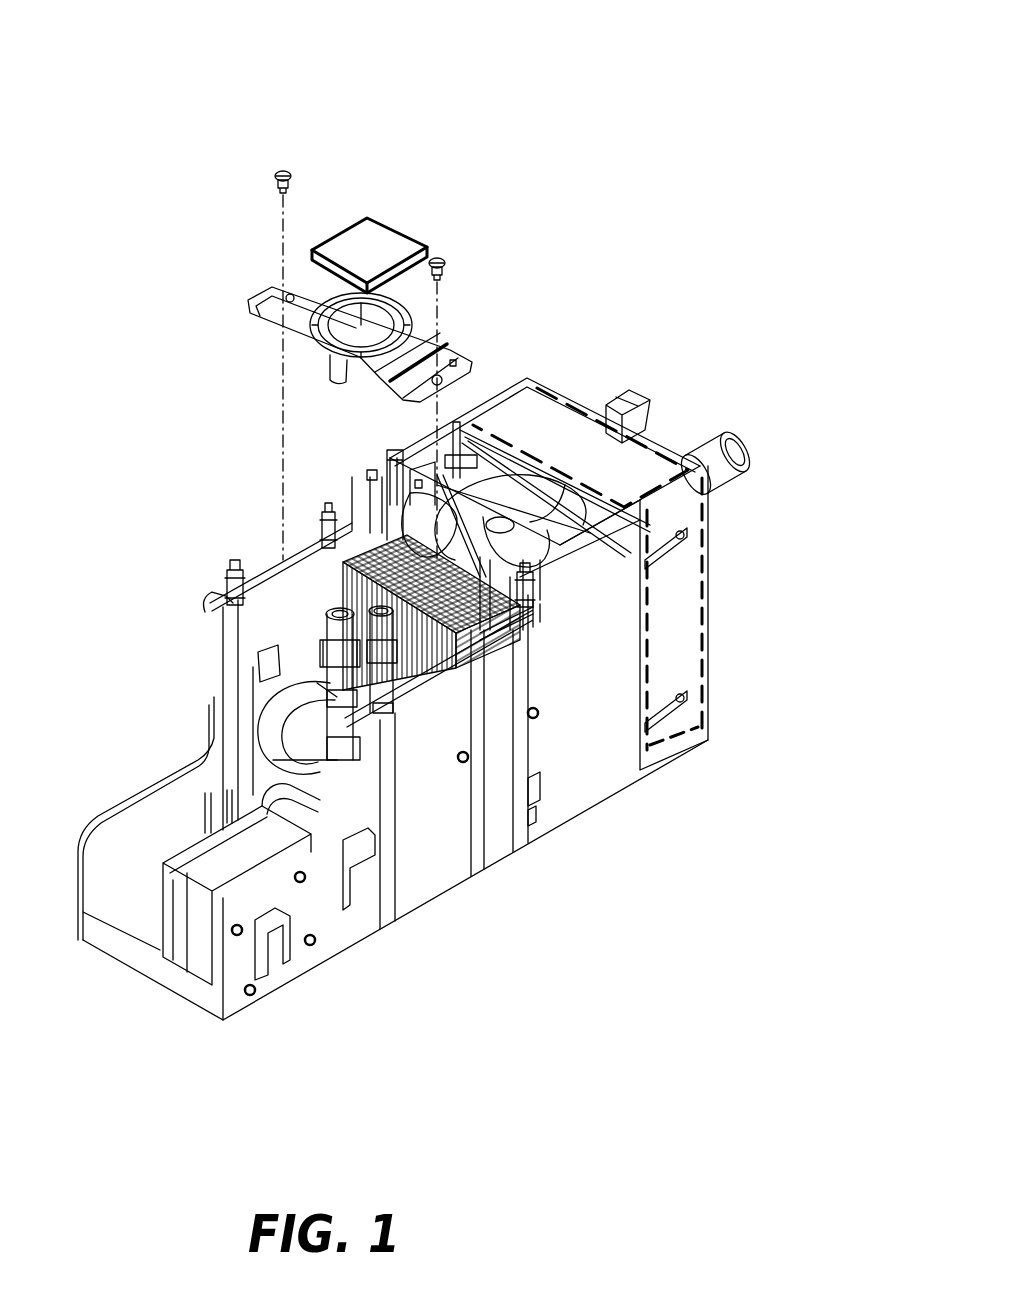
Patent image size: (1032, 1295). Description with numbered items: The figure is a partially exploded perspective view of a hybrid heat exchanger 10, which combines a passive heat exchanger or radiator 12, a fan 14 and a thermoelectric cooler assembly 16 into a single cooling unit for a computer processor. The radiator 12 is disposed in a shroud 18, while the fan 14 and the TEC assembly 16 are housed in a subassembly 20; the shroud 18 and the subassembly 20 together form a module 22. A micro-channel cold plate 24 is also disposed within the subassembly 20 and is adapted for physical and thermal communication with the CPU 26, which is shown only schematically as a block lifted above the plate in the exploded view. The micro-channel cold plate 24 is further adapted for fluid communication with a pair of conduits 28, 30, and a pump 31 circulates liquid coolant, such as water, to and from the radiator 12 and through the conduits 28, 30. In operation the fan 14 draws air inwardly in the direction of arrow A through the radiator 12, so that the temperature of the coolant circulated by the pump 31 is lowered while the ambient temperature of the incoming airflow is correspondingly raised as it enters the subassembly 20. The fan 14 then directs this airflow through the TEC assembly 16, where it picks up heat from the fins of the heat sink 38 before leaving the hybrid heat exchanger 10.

The hybrid heat exchanger 10 is at (760, 128).
The radiator 12 is at (558, 392).
The fan 14 is at (550, 528).
The thermoelectric cooler (TEC) assembly 16 is at (353, 538).
The shroud 18 is at (705, 740).
The subassembly 20 is at (613, 774).
The module 22 is at (452, 901).
The micro-channel cold plate 24 is at (262, 294).
The CPU 26 is at (372, 232).
The conduit 28 is at (262, 718).
The conduit 30 is at (357, 690).
The pump 31 is at (193, 938).
The heat sink 38 is at (348, 546).
The arrow A is at (812, 485).